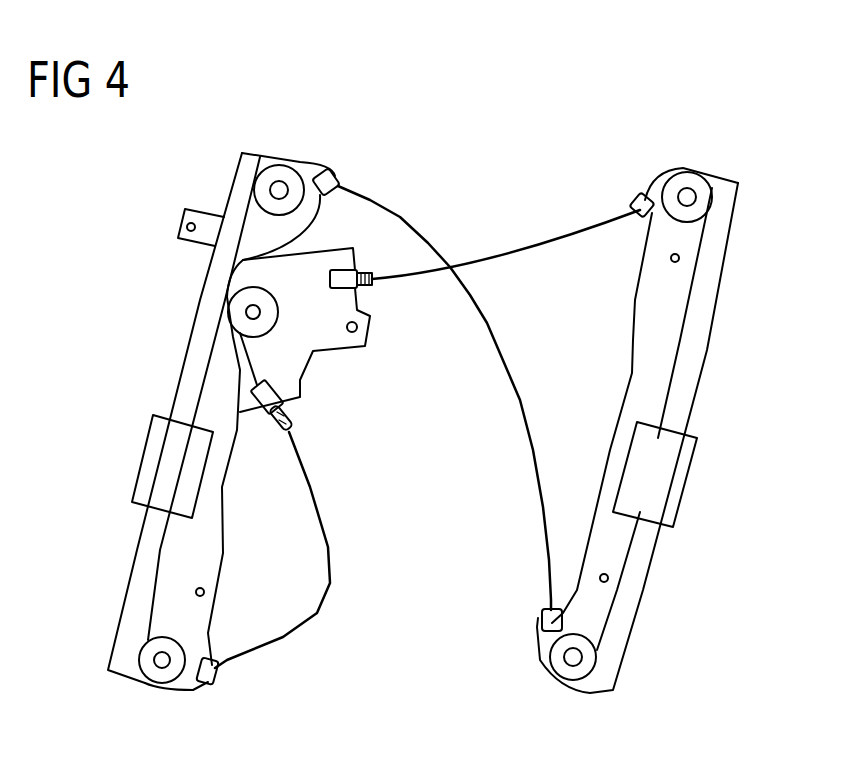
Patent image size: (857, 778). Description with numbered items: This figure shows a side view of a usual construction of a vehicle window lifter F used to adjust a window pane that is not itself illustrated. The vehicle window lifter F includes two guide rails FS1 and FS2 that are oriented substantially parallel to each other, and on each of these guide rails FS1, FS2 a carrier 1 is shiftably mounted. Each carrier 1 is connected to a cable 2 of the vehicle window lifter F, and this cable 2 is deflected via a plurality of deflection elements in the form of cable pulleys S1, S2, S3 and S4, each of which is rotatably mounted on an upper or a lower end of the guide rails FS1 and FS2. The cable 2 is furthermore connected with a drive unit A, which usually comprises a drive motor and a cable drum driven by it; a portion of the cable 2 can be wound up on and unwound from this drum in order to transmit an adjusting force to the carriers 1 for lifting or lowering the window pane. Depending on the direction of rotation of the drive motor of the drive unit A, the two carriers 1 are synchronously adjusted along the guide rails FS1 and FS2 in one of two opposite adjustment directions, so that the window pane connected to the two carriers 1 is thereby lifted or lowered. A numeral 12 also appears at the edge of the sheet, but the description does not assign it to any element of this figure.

The carrier 1 is at (132, 488).
The cable 2 is at (685, 328).
The window lifter 12 is at (847, 768).
The drive unit A is at (305, 340).
The vehicle window lifter F is at (782, 142).
The guide rail FS1 is at (238, 210).
The guide rail FS2 is at (712, 270).
The cable pulley S1 is at (275, 176).
The cable pulley S2 is at (162, 672).
The cable pulley S3 is at (700, 180).
The cable pulley S4 is at (583, 670).